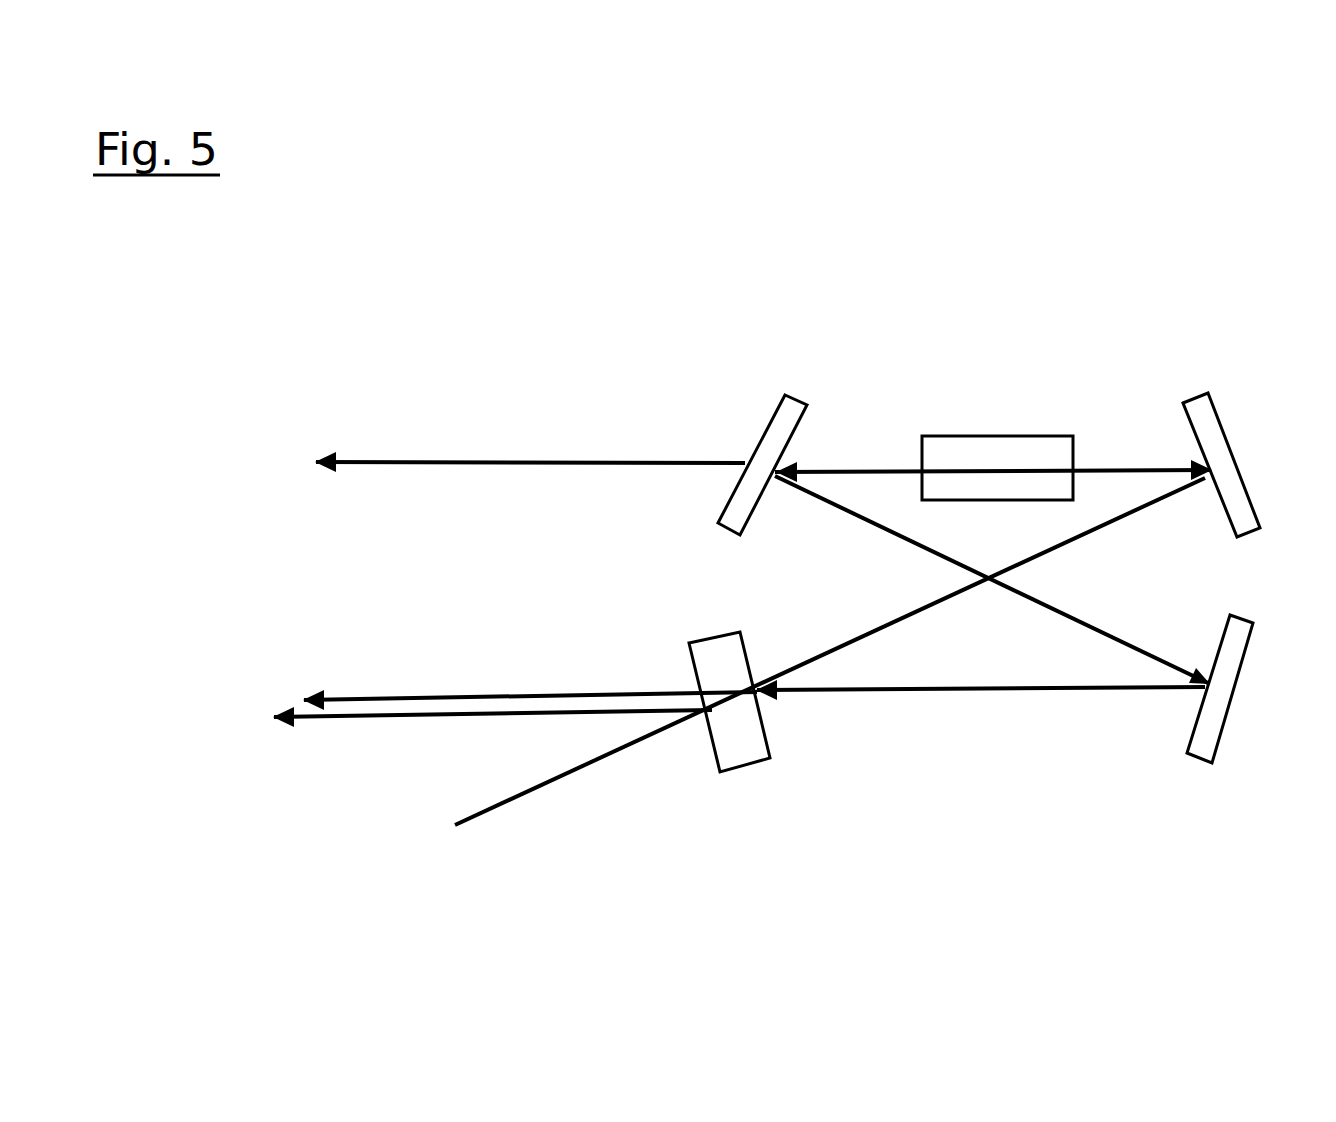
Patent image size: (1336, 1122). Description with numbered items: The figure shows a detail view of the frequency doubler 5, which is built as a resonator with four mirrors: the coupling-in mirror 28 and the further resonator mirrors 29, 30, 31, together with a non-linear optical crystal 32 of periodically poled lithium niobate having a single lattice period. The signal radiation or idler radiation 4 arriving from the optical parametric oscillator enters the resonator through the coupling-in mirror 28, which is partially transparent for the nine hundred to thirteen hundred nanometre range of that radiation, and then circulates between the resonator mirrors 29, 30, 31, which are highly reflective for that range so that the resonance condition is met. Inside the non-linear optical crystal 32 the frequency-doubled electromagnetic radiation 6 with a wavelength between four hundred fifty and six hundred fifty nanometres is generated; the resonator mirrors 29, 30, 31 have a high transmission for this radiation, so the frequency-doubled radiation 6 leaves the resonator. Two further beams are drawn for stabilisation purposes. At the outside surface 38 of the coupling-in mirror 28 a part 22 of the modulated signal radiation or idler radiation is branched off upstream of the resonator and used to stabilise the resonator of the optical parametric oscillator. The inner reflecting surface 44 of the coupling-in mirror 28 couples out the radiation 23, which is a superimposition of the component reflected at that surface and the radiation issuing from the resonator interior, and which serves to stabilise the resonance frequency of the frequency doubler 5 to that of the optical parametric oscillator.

The frequency doubler 5 is at (1010, 300).
The signal radiation or idler radiation 4 is at (608, 760).
The frequency-doubled electromagnetic radiation 6 is at (540, 468).
The part of the modulated signal radiation or idler radiation 22 is at (400, 720).
The coupled-out radiation 23 is at (455, 690).
The coupling-in mirror 28 is at (723, 733).
The resonator mirror 29 is at (1220, 693).
The resonator mirror 30 is at (752, 462).
The resonator mirror 31 is at (1237, 455).
The non-linear optical crystal 32 is at (965, 458).
The outside surface 38 is at (708, 755).
The inner reflecting surface 44 is at (767, 732).